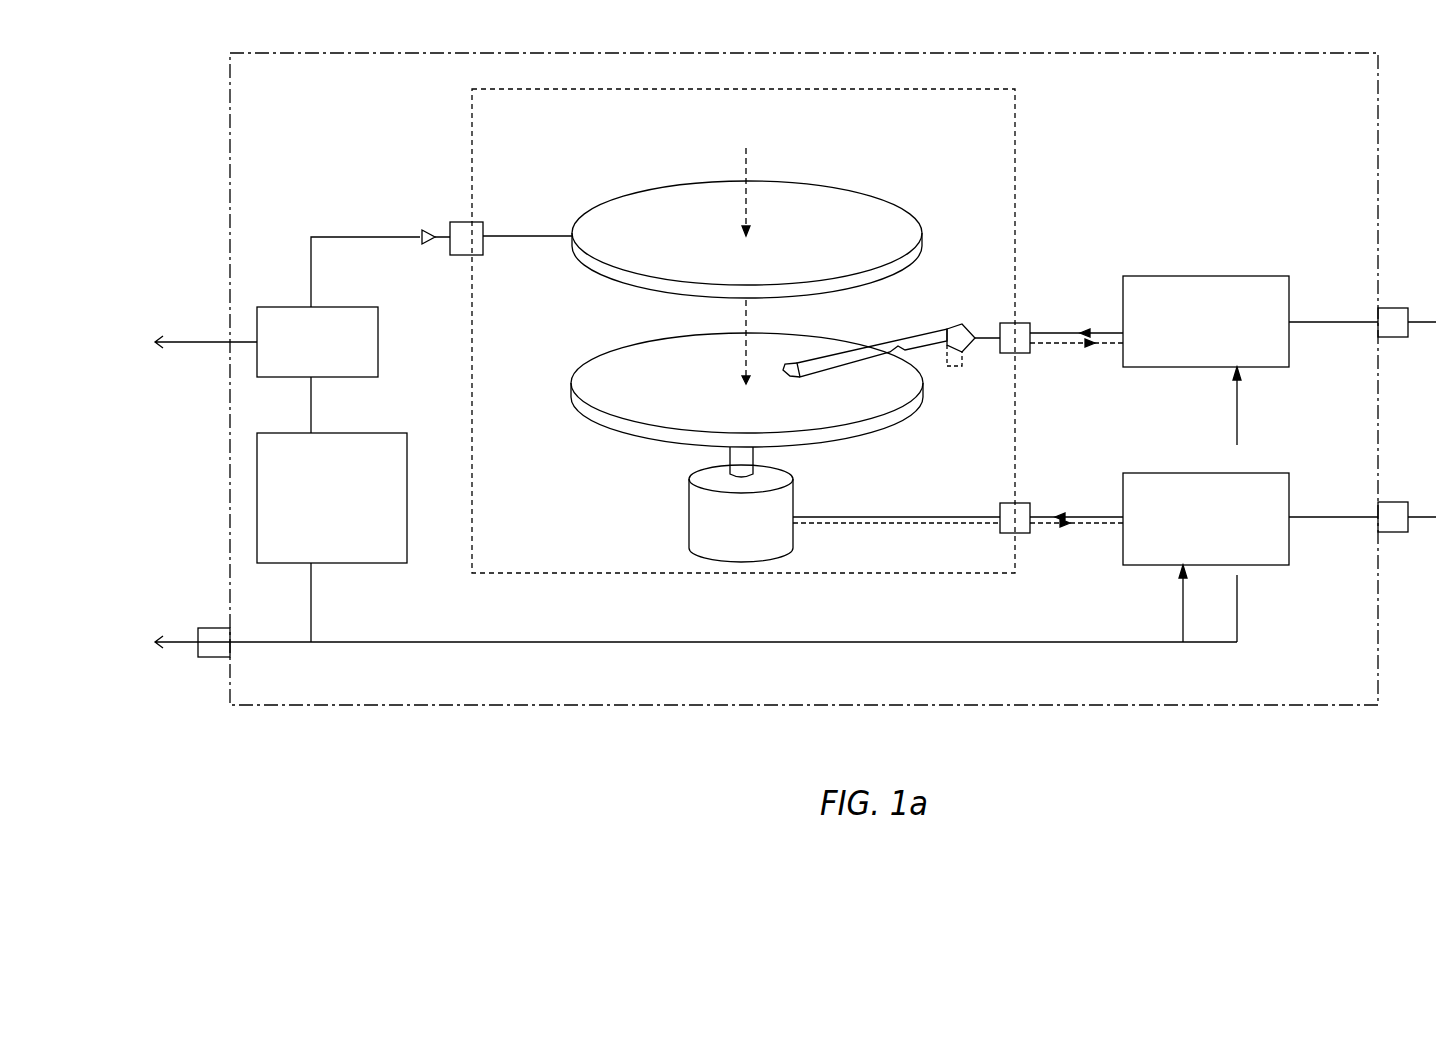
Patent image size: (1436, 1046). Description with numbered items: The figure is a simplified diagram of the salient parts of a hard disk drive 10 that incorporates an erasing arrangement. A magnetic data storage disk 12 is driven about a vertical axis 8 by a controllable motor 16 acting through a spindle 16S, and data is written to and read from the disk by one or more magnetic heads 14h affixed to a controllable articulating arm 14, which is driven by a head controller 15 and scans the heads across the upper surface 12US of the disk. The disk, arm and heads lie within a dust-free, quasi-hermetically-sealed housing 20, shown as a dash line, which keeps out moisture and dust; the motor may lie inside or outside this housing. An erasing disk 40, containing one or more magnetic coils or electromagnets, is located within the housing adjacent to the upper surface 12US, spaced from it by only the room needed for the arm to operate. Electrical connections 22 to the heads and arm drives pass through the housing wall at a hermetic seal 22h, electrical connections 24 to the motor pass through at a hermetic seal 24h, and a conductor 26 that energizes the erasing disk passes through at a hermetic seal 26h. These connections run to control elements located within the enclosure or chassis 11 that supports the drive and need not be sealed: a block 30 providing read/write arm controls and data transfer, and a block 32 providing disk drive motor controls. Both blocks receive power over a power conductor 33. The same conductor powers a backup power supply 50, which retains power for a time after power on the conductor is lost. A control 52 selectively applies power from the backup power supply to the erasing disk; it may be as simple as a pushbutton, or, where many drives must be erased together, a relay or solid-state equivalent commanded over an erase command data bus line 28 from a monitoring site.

The vertical axis 8 is at (746, 161).
The hard disk drive 10 is at (804, 404).
The enclosure or chassis 11 is at (990, 708).
The magnetic data storage disk 12 is at (734, 401).
The upper surface 12US is at (620, 383).
The controllable articulating arm 14 is at (912, 328).
The magnetic heads 14h is at (795, 388).
The head controller 15 is at (965, 330).
The controllable motor 16 is at (710, 527).
The spindle 16S is at (730, 453).
The quasi-hermetically-sealed housing 20 is at (1018, 176).
The electrical connections 22 is at (1057, 325).
The hermetic seal 22h is at (1030, 348).
The electrical connections 24 is at (960, 515).
The hermetic seal 24h is at (1000, 531).
The conductor 26 is at (311, 262).
The hermetic seal 26h is at (455, 222).
The erase command data bus line 28 is at (183, 341).
The read/write arm controls and data transfer 30 is at (1225, 276).
The disk drive motor controls 32 is at (1183, 473).
The power conductor 33 is at (311, 598).
The erasing disk 40 is at (633, 198).
The backup power supply 50 is at (407, 546).
The control 52 is at (378, 371).